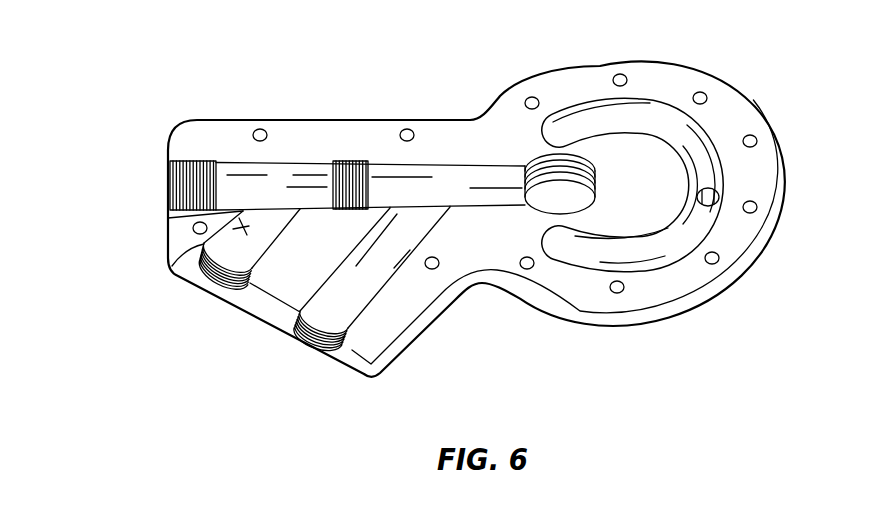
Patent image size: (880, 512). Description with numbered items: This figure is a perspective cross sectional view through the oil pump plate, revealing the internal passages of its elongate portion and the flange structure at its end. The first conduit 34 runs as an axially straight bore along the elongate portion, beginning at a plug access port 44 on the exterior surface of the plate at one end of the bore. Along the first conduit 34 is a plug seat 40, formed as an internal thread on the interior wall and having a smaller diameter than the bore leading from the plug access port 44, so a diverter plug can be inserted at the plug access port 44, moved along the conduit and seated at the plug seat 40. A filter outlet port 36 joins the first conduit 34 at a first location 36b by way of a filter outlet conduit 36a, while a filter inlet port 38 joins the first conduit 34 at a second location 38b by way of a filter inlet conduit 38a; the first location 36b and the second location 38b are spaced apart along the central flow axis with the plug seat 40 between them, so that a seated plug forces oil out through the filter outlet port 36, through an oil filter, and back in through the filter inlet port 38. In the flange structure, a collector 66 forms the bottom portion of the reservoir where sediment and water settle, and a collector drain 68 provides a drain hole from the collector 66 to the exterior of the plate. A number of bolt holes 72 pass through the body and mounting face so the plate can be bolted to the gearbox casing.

The first conduit 34 is at (318, 178).
The filter outlet port 36 is at (322, 340).
The filter outlet conduit 36a is at (363, 292).
The first location 36b is at (433, 212).
The filter inlet port 38 is at (225, 284).
The filter inlet conduit 38a is at (170, 221).
The second location 38b is at (264, 213).
The plug seat 40 is at (351, 176).
The plug access port 44 is at (183, 183).
The collector 66 is at (698, 145).
The collector drain 68 is at (712, 193).
The bolt holes 72 is at (717, 260).